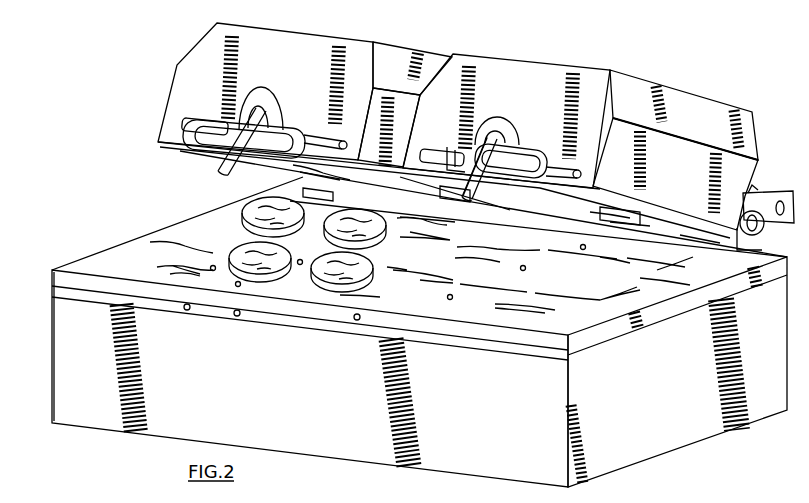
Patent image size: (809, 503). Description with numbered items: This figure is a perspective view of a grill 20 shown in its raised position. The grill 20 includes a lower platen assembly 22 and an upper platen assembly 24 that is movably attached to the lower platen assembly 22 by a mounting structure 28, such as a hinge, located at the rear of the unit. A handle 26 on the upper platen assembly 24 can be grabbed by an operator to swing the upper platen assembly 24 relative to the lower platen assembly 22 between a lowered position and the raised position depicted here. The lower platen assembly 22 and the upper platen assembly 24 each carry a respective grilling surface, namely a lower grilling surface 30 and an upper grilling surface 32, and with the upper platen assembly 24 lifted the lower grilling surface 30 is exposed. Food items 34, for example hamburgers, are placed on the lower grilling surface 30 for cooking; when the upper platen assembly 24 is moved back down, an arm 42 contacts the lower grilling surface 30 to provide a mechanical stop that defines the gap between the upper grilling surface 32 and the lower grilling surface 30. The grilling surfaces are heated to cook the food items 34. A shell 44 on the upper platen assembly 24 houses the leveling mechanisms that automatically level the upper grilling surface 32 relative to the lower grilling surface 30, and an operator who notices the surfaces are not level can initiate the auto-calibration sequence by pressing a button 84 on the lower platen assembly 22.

The grill 20 is at (585, 48).
The lower platen assembly 22 is at (659, 289).
The upper platen assembly 24 is at (299, 40).
The handle 26 is at (527, 164).
The mounting structure 28 is at (762, 232).
The lower grilling surface 30 is at (148, 250).
The upper grilling surface 32 is at (271, 163).
The food items 34 is at (379, 238).
The arm 42 is at (458, 144).
The shell 44 is at (683, 103).
The button 84 is at (184, 311).